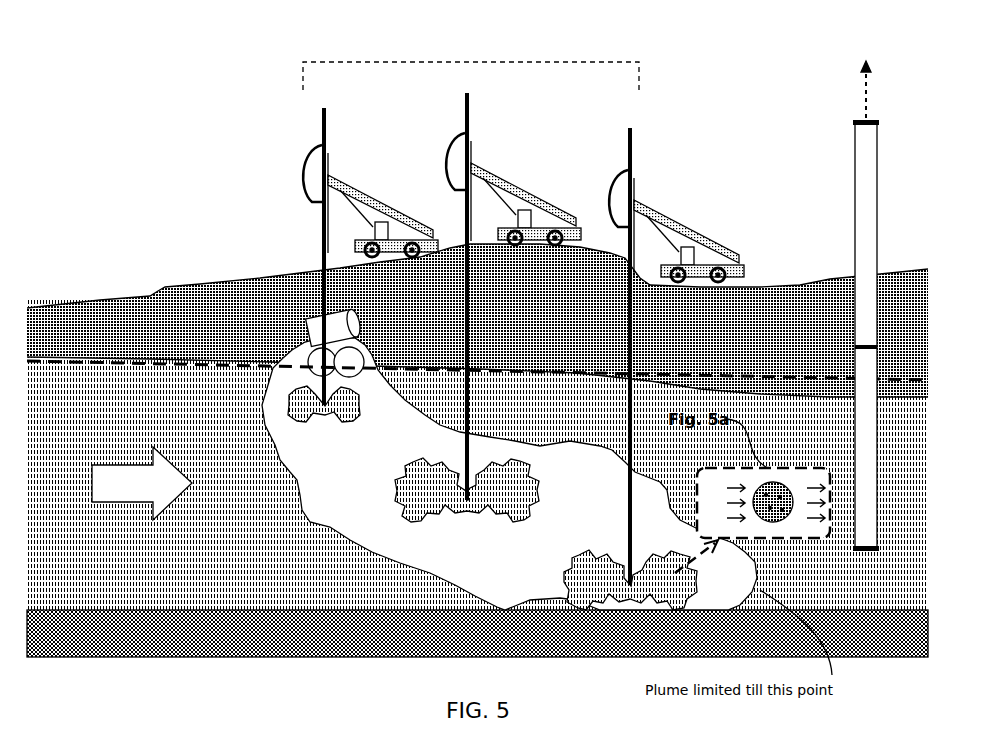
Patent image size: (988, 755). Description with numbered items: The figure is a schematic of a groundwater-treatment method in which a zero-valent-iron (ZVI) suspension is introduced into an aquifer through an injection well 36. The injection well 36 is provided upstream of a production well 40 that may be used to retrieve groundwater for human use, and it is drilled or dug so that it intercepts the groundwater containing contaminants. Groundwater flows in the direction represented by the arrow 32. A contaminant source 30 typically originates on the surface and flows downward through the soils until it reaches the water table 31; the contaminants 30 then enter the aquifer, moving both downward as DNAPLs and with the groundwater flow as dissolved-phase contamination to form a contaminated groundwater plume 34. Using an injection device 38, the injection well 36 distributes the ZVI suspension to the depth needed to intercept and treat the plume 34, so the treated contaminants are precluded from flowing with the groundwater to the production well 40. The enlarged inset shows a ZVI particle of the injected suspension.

The contaminants 30 is at (290, 350).
The water table 31 is at (100, 356).
The arrow defining direction of water below water table 32 is at (142, 483).
The plume of water 34 is at (377, 557).
The injection well 36 is at (470, 60).
The injection device 38 is at (368, 192).
The production well 40 is at (877, 158).